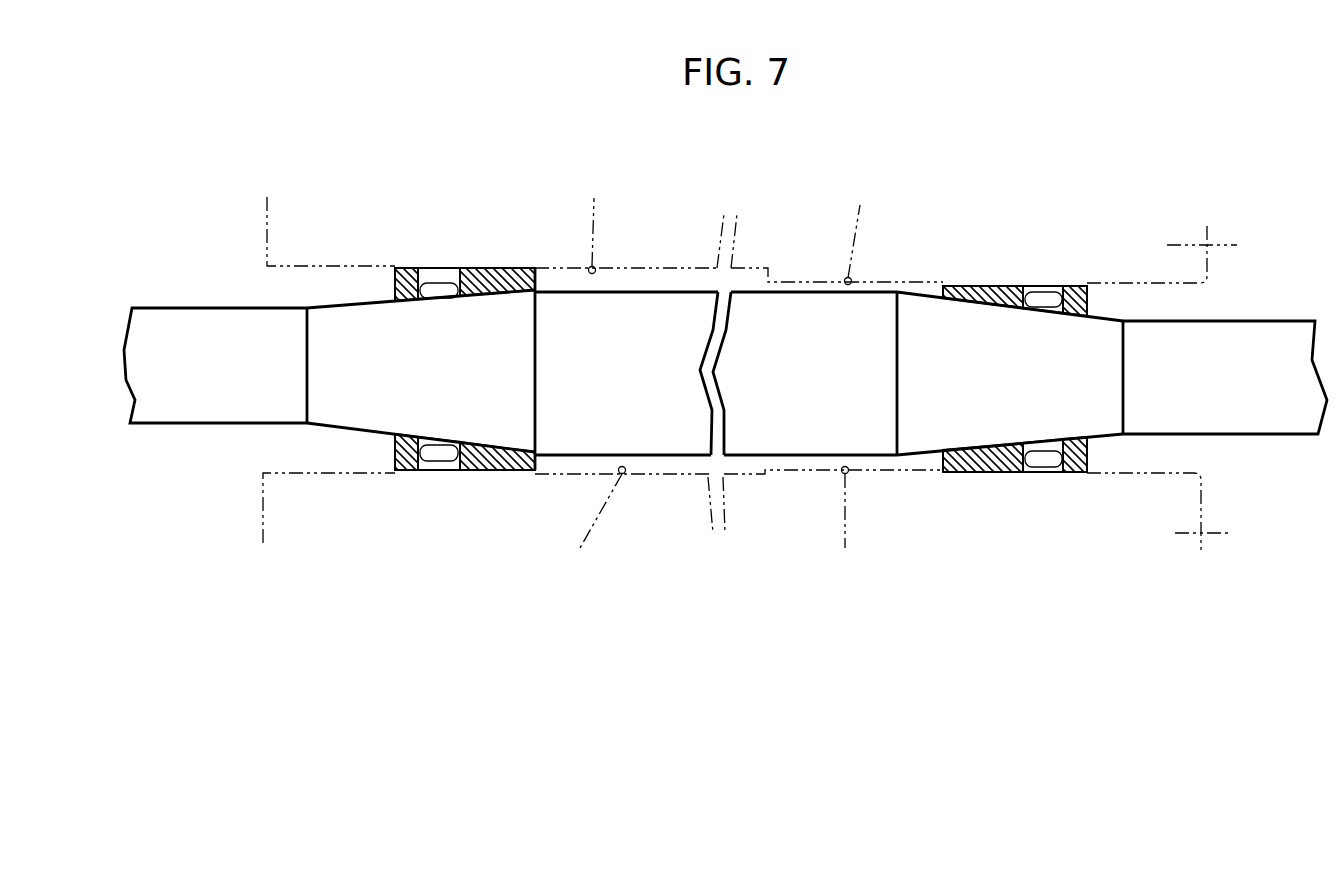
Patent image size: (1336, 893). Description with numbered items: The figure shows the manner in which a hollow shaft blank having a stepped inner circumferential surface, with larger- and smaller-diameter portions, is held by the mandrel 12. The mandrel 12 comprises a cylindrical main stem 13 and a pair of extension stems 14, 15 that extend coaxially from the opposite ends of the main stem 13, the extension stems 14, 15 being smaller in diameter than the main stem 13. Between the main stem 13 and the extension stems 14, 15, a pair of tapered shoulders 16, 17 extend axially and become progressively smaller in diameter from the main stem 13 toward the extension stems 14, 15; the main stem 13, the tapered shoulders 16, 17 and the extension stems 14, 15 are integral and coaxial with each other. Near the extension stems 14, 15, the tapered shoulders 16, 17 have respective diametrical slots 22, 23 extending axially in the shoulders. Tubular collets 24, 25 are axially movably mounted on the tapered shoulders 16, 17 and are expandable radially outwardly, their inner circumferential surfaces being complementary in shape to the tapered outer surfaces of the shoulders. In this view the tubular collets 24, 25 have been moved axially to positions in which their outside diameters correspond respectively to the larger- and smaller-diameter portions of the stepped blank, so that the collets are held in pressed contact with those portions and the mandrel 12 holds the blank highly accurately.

The mandrel 12 is at (1193, 190).
The main stem 13 is at (620, 312).
The extension stem 14 is at (190, 353).
The extension stem 15 is at (1207, 355).
The tapered shoulder 16 is at (372, 403).
The tapered shoulder 17 is at (1105, 400).
The diametrical slot 22 is at (435, 285).
The diametrical slot 23 is at (1043, 298).
The tubular collet 24 is at (503, 277).
The tubular collet 25 is at (975, 297).